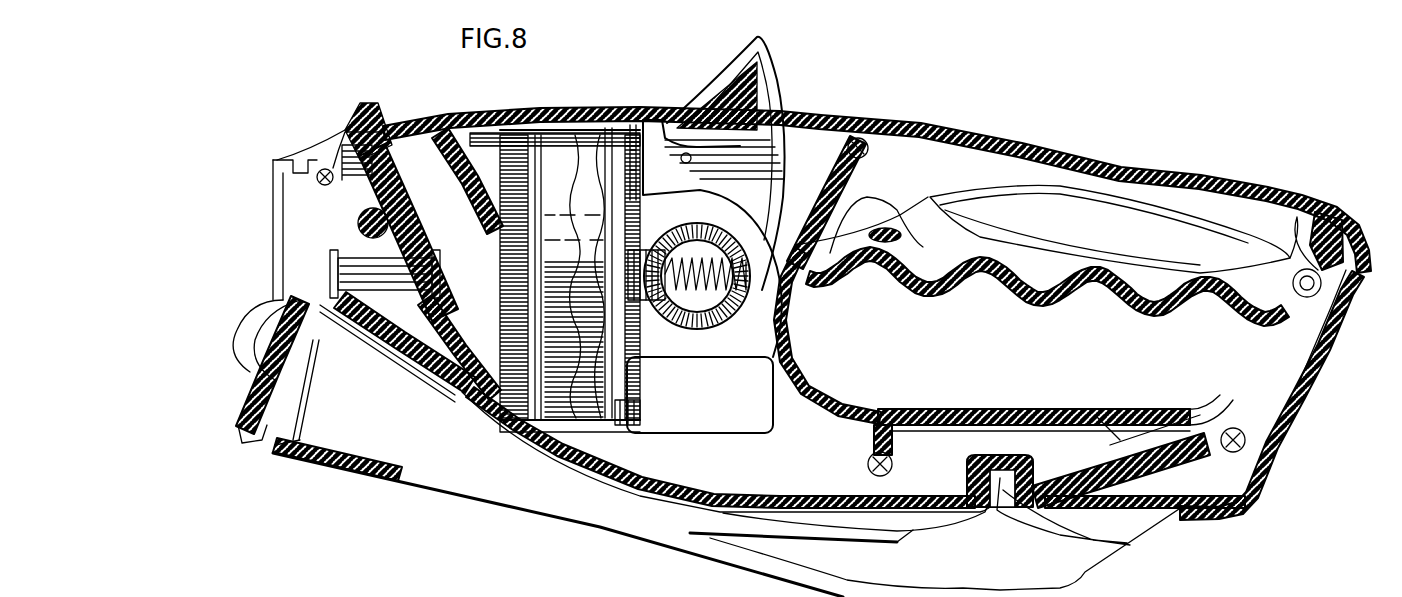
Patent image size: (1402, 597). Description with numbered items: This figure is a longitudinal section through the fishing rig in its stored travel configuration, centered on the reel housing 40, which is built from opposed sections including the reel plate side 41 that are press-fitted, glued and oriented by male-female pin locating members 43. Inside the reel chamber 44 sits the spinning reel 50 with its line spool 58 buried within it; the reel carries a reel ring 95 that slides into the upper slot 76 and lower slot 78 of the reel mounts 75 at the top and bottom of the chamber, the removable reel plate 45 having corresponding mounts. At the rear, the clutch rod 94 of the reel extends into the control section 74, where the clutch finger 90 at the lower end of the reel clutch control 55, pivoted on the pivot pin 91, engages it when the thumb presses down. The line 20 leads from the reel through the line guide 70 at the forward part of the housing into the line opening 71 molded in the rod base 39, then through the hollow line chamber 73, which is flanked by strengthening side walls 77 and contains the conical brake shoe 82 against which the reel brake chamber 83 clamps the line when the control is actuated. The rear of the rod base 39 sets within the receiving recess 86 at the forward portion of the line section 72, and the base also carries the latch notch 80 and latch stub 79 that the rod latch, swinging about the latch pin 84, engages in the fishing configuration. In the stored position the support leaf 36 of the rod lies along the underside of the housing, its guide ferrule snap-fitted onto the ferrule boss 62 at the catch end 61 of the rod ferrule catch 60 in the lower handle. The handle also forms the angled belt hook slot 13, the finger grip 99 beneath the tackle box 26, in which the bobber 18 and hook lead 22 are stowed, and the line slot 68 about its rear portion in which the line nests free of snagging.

The belt hook slot 13 is at (1180, 500).
The bobber 18 is at (1160, 178).
The line 20 is at (482, 332).
The hook lead 22 is at (1224, 592).
The tackle box 26 is at (973, 168).
The support leaf 36 is at (900, 543).
The rod base 39 is at (265, 383).
The reel housing 40 is at (486, 103).
The reel plate side 41 is at (1066, 139).
The male-female pin locating members 43 is at (896, 137).
The reel chamber 44 is at (597, 126).
The reel plate 45 is at (504, 413).
The reel 50 is at (585, 270).
The reel clutch control 55 is at (797, 76).
The line spool 58 is at (576, 242).
The rod ferrule catch 60 is at (1005, 494).
The catch end 61 is at (975, 462).
The ferrule boss 62 is at (978, 478).
The line slot 68 is at (1300, 385).
The line guide 70 is at (385, 294).
The line opening 71 is at (316, 350).
The line section 72 is at (718, 100).
The line chamber 73 is at (440, 132).
The control section 74 is at (711, 390).
The reel mount 75 is at (642, 128).
The upper slot 76 is at (627, 124).
The side walls 77 is at (357, 414).
The lower slot 78 is at (643, 414).
The latch stub 79 is at (244, 445).
The latch notch 80 is at (266, 444).
The conical brake shoe 82 is at (462, 200).
The reel brake chamber 83 is at (527, 203).
The latch pin 84 is at (277, 160).
The receiving recess 86 is at (300, 228).
The clutch finger 90 is at (808, 286).
The pivot pin 91 is at (690, 154).
The clutch rod 94 is at (742, 330).
The reel ring 95 is at (648, 330).
The finger grip 99 is at (1058, 305).